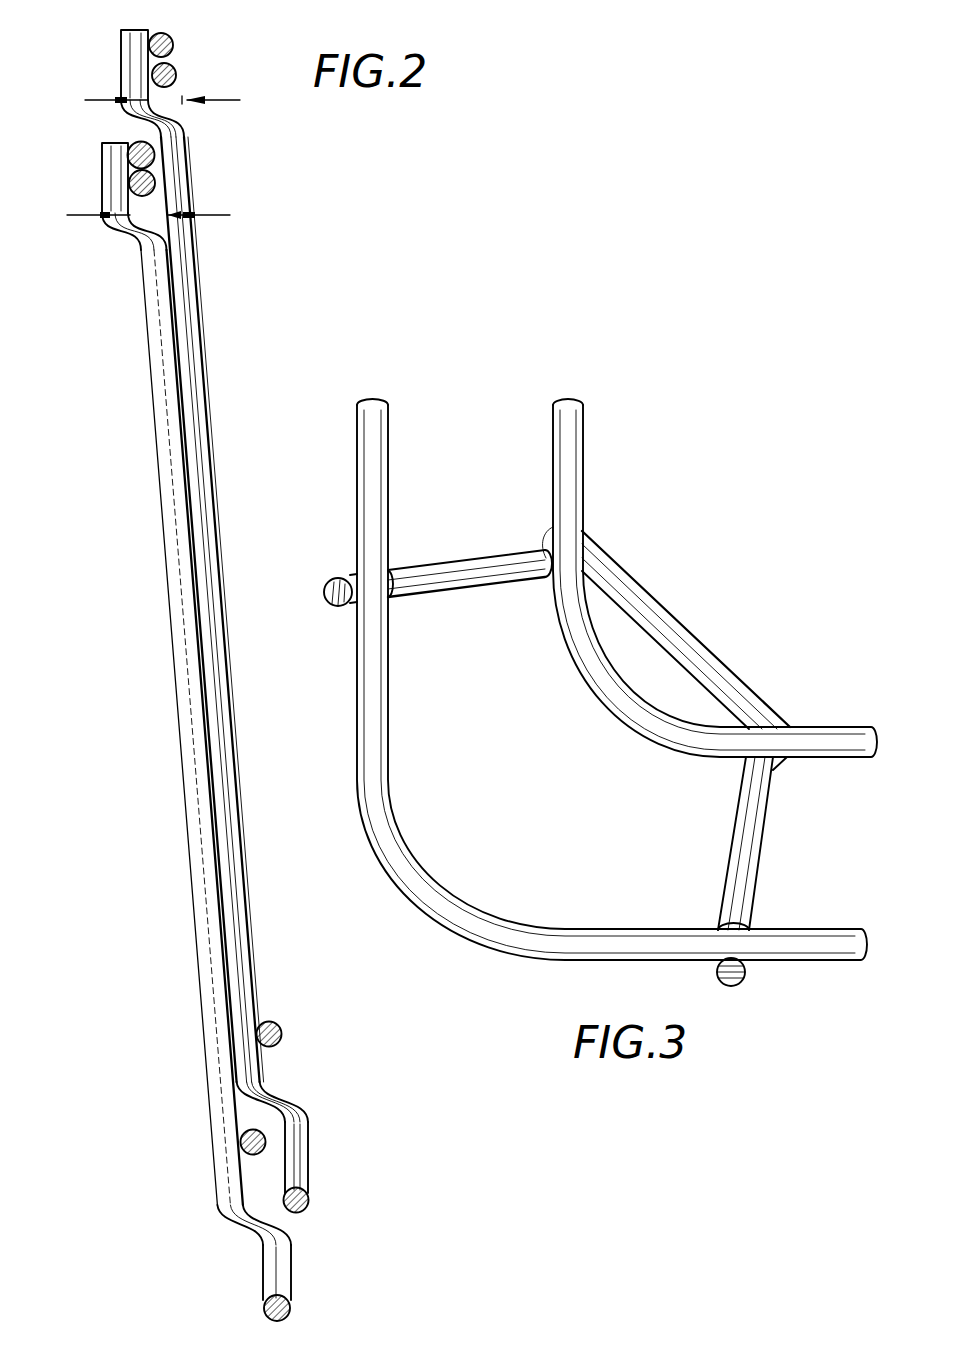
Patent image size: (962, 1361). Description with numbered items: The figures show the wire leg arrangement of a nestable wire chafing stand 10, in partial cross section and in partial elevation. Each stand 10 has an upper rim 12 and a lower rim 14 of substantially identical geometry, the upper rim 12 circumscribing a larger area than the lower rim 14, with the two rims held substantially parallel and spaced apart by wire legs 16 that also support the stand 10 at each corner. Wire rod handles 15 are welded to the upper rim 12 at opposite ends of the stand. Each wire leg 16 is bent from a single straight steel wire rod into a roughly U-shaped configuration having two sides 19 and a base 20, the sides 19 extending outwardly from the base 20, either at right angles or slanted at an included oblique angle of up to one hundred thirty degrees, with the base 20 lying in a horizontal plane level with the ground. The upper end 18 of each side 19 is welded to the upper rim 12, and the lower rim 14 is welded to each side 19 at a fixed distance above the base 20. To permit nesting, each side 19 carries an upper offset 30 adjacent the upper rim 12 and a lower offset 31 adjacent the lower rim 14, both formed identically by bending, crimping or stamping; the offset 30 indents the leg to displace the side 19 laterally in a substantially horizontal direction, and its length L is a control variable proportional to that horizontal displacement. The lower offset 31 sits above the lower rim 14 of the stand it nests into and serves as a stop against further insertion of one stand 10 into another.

In FIG. 3, the wire chafing stand 10 is at (343, 418).
In FIG. 2, the upper rim 12 is at (170, 40).
In FIG. 3, the upper rim 12 is at (356, 684).
In FIG. 2, the lower rim 14 is at (282, 1030).
In FIG. 3, the lower rim 14 is at (573, 441).
In FIG. 2, the wire rod handle 15 is at (178, 78).
In FIG. 2, the wire leg 16 is at (150, 481).
In FIG. 3, the wire leg 16 is at (452, 549).
In FIG. 2, the upper end 18 is at (121, 62).
In FIG. 3, the upper end 18 is at (327, 580).
In FIG. 2, the side 19 is at (215, 502).
In FIG. 3, the side 19 is at (447, 590).
In FIG. 2, the base 20 is at (309, 1208).
In FIG. 3, the base 20 is at (703, 660).
In FIG. 2, the offset 30 is at (141, 124).
In FIG. 3, the offset 30 is at (391, 602).
In FIG. 2, the lower offset 31 is at (264, 1092).
In FIG. 2, the length of the offset L is at (165, 100).